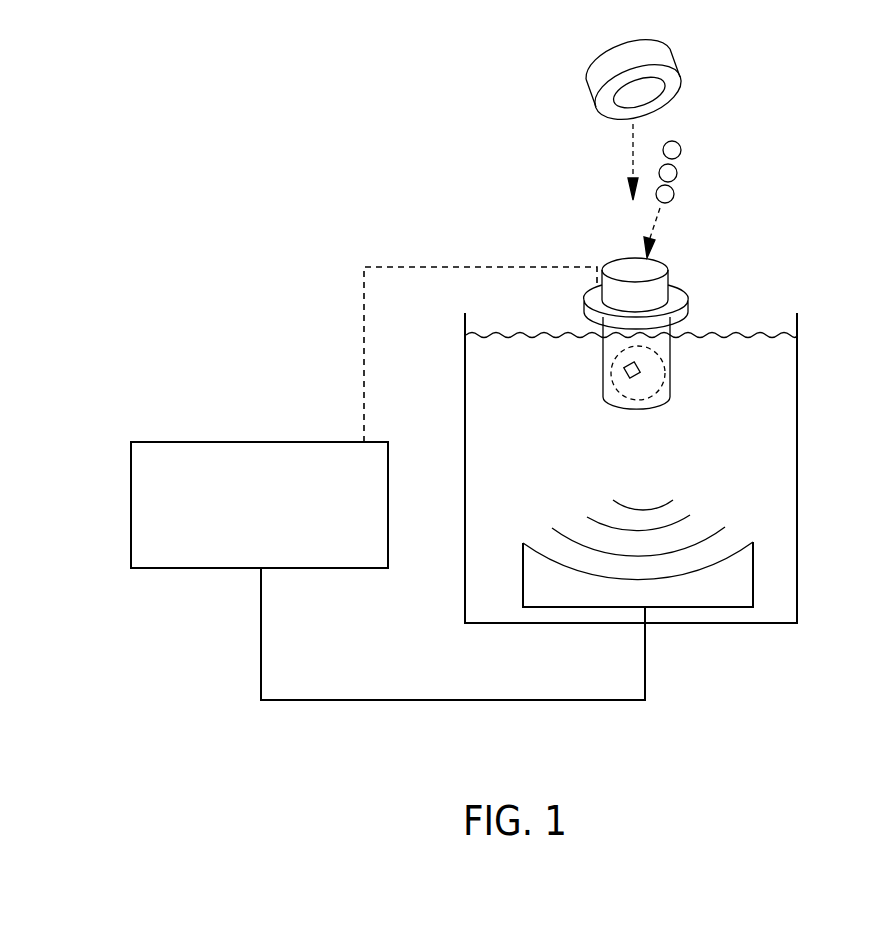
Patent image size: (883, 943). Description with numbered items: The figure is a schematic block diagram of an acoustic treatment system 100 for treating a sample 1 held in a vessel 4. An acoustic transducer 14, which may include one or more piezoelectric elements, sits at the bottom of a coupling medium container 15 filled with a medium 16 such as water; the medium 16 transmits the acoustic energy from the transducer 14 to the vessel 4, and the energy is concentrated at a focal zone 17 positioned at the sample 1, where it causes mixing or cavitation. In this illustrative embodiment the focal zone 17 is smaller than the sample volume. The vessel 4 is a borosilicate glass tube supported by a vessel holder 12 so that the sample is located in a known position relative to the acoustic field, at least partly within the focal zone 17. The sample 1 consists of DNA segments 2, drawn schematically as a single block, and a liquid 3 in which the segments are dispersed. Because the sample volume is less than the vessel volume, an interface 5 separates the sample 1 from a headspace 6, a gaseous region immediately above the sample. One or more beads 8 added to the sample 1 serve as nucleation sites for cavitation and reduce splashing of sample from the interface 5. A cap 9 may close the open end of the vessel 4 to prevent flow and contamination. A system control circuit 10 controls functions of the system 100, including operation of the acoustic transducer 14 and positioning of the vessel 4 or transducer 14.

The acoustic treatment system 100 is at (160, 280).
The system control circuit 10 is at (131, 504).
The sample 1 is at (712, 374).
The DNA segments 2 is at (625, 372).
The liquid 3 is at (667, 396).
The vessel 4 is at (666, 266).
The interface 5 is at (655, 335).
The headspace 6 is at (604, 252).
The beads 8 is at (682, 158).
The cap 9 is at (668, 56).
The vessel holder 12 is at (585, 316).
The acoustic transducer 14 is at (722, 600).
The coupling medium container 15 is at (797, 513).
The medium 16 is at (788, 436).
The focal zone 17 is at (612, 405).